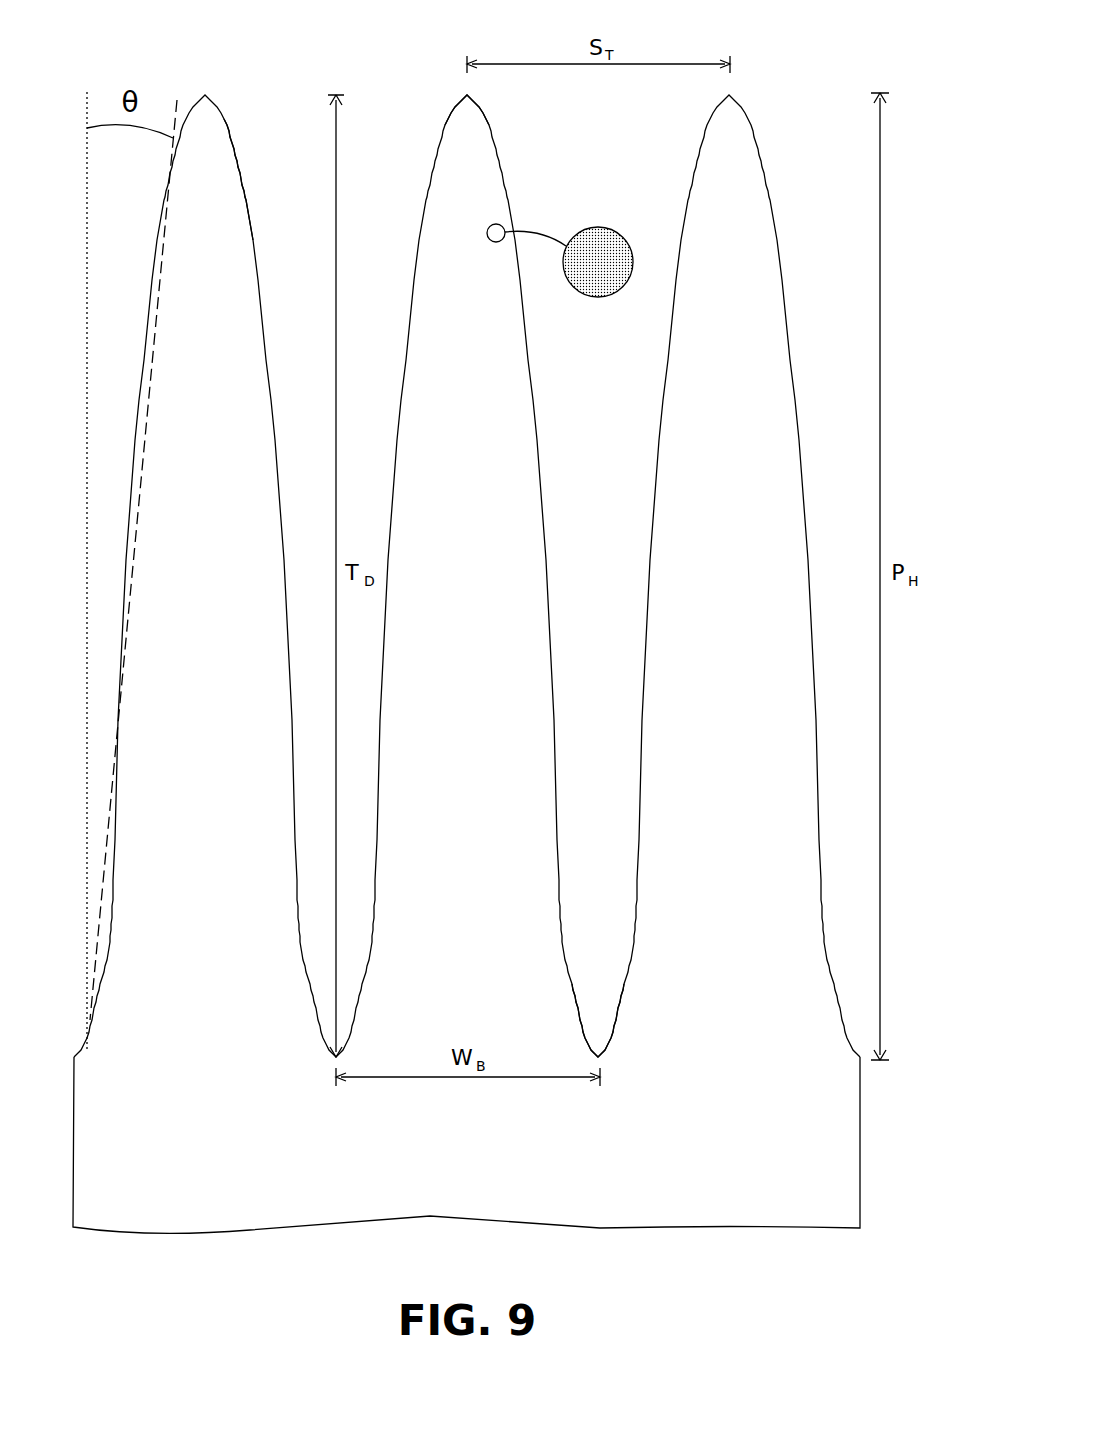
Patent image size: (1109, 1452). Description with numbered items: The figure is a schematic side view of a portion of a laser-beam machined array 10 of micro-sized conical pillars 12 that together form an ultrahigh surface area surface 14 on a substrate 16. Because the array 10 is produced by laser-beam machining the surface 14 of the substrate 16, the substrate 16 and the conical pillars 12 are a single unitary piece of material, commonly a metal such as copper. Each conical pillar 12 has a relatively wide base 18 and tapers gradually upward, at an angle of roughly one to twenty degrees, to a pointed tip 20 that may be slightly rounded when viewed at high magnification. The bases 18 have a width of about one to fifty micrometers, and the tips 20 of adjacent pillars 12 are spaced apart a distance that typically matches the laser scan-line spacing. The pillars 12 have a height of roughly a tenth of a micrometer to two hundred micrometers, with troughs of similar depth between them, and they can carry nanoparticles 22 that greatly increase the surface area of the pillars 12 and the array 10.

The laser-beam machined array 10 is at (817, 50).
The micro-sized conical pillar 12 is at (193, 678).
The ultrahigh surface area surface 14 is at (939, 50).
The substrate 16 is at (456, 1182).
The base 18 is at (590, 1002).
The pointed tip 20 is at (522, 124).
The nanoparticles 22 is at (286, 108).